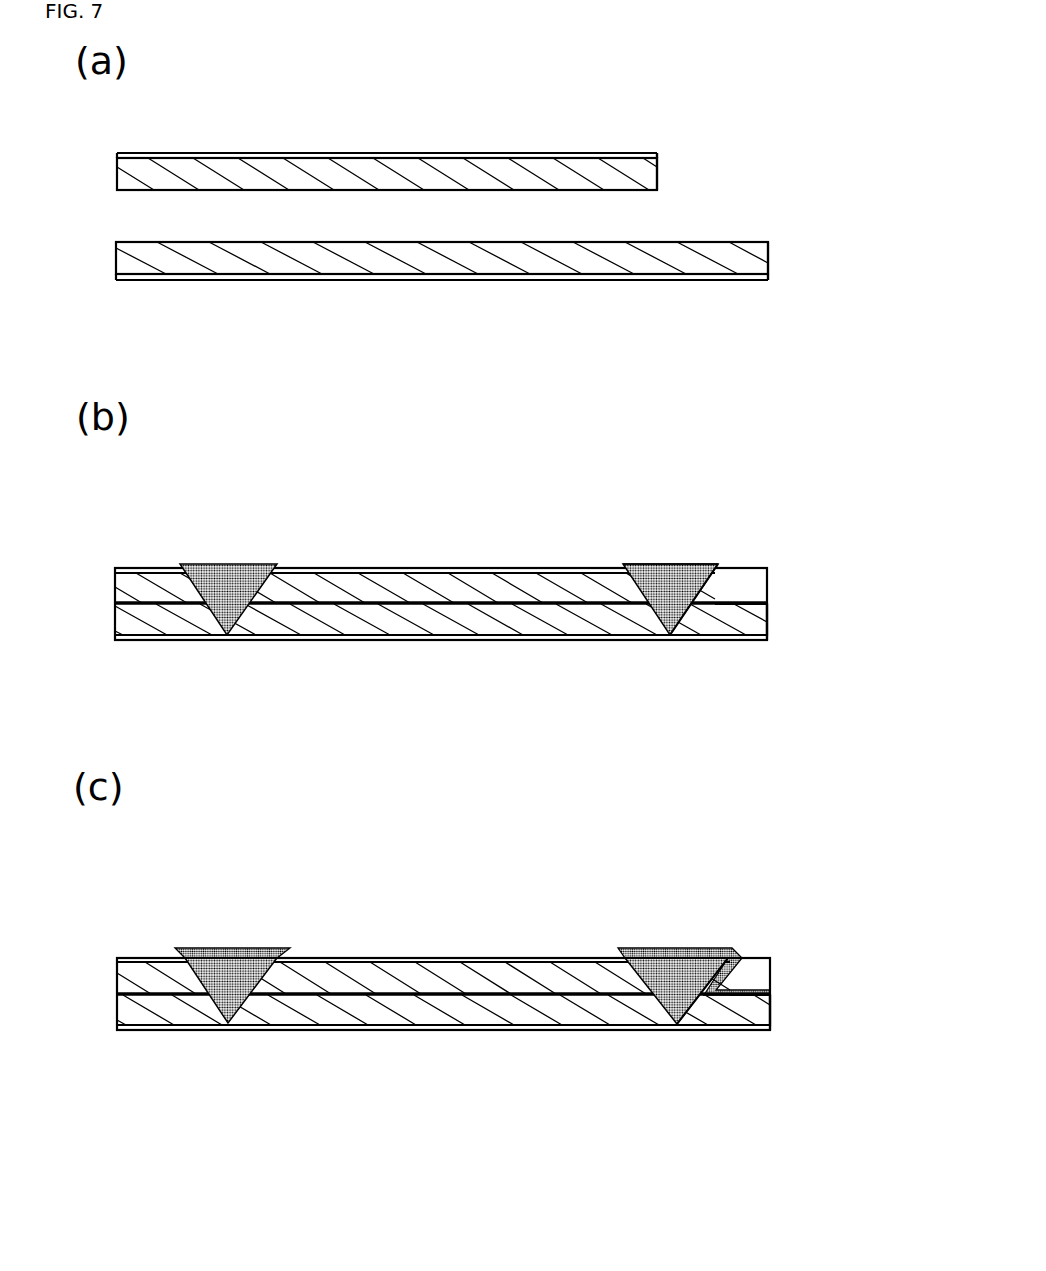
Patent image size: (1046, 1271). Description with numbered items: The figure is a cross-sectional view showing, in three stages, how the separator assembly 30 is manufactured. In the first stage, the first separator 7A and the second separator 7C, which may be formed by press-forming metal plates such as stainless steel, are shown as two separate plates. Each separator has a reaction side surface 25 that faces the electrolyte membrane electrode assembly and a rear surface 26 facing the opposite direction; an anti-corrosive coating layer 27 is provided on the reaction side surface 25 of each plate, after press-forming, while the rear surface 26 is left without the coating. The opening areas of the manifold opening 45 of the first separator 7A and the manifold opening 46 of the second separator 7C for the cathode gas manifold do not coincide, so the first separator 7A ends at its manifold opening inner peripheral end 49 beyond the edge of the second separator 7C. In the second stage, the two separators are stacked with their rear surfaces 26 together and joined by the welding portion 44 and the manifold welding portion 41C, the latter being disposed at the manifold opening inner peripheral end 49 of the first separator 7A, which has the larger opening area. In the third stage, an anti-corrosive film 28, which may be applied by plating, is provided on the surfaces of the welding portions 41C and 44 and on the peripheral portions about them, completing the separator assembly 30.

The first separator 7A is at (385, 165).
The second separator 7C is at (430, 275).
The reaction side surface 25 is at (566, 157).
The rear surface 26 is at (617, 191).
The anti-corrosive coating layer 27 is at (488, 153).
The anti-corrosive film 28 is at (247, 947).
The separator assembly 30 is at (115, 560).
The manifold welding portion 41C is at (653, 612).
The welding portion 44 is at (227, 635).
The manifold opening of the first separator 45 is at (658, 172).
The manifold opening of the second separator 46 is at (768, 266).
The manifold opening inner peripheral end 49 is at (643, 165).